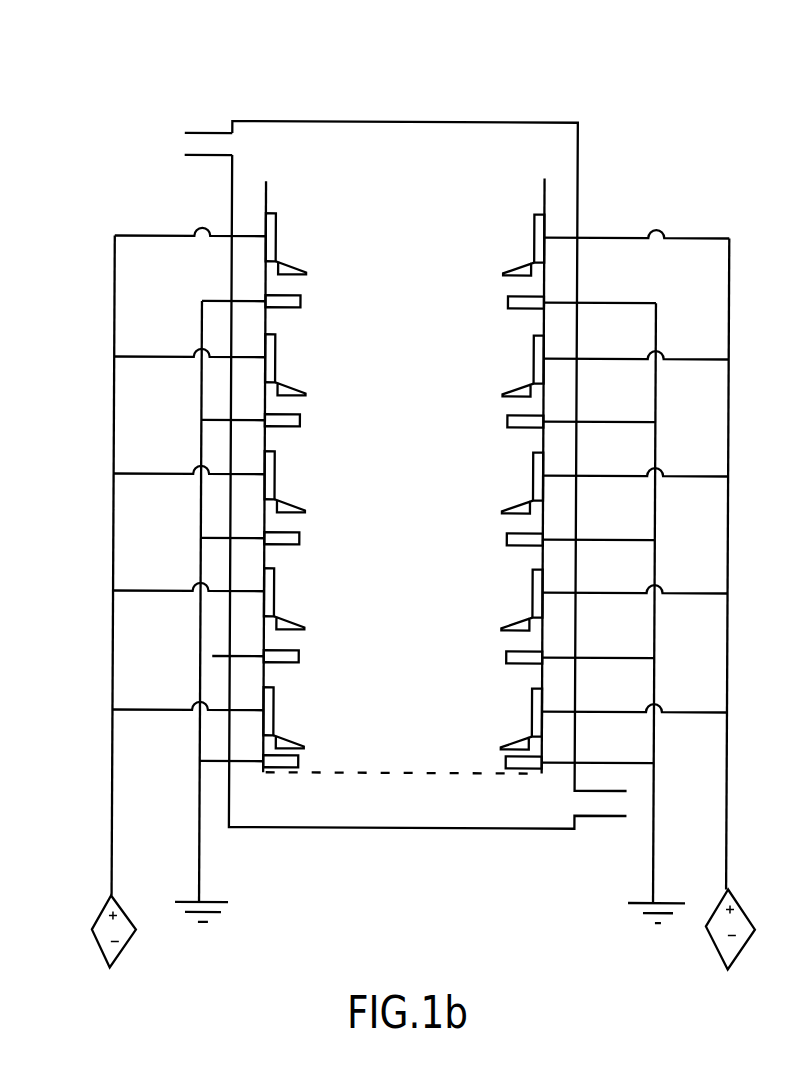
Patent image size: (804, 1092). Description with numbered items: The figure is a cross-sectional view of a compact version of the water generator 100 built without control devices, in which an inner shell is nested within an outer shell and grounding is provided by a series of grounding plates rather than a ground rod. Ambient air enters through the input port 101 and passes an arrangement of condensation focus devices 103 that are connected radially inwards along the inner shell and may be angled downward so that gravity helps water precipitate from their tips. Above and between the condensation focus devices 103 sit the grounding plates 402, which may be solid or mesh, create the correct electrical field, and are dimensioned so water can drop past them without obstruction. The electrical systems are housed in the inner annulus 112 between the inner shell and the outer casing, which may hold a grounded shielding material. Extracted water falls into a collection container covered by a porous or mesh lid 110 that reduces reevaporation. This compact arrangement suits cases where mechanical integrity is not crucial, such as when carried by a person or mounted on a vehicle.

The water generator 100 is at (637, 68).
The input port 101 is at (202, 122).
The condensation focus device 103 is at (270, 362).
The porous or mesh lid 110 is at (340, 782).
The inner annulus 112 is at (552, 212).
The grounding plate 402 is at (263, 548).